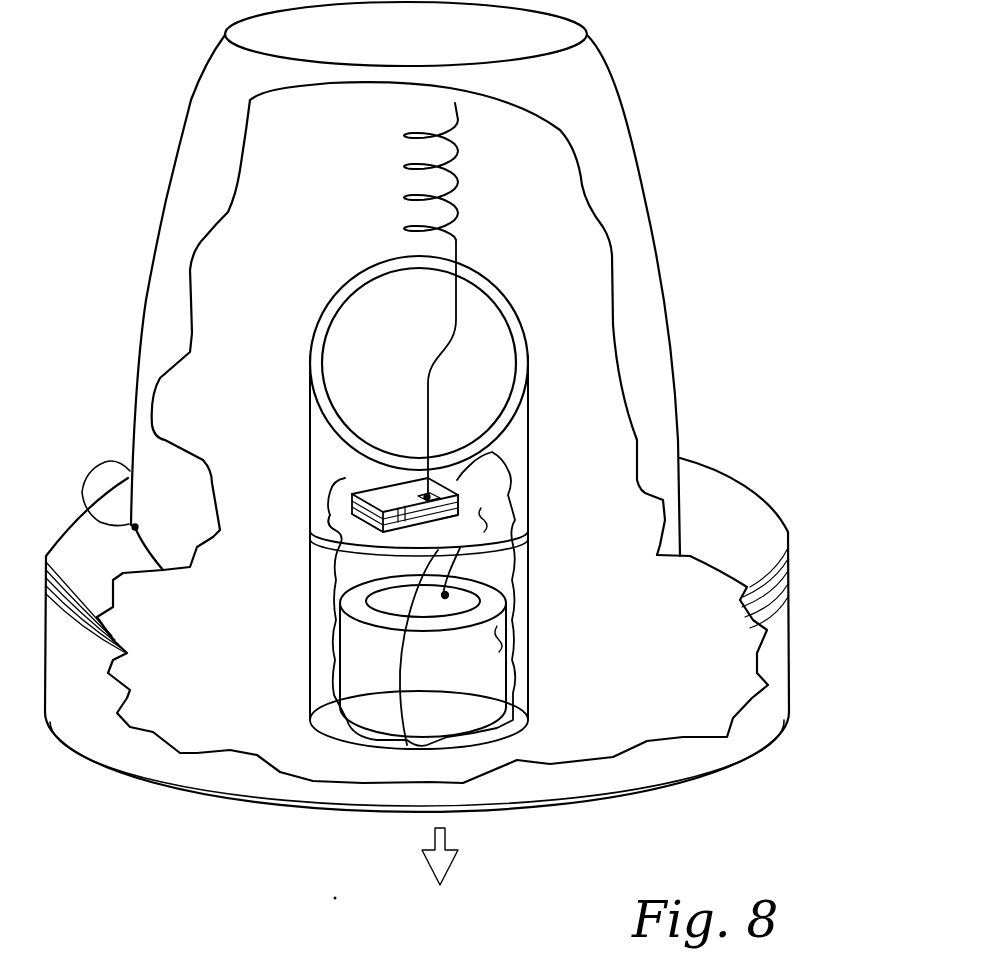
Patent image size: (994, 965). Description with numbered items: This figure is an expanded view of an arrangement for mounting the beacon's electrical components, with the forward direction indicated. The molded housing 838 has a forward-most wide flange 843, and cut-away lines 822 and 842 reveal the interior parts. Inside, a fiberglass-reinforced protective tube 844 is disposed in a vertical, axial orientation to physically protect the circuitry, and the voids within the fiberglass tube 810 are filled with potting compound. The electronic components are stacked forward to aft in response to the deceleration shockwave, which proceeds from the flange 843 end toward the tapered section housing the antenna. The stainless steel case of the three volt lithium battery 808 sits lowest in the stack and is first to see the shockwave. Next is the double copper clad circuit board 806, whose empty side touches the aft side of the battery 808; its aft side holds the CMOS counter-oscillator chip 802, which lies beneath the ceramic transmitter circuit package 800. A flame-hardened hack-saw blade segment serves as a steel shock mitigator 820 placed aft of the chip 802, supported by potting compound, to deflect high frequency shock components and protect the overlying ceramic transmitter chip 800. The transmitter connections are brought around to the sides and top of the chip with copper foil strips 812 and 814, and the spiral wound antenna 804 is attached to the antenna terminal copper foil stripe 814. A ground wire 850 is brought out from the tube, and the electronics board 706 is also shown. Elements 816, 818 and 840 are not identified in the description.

The electronics board 706 is at (387, 543).
The ceramic transmitter chip 800 is at (372, 497).
The counter-oscillator circuit chip 802 is at (450, 352).
The spiral wound antenna 804 is at (460, 186).
The circuit board 806 is at (490, 520).
The lithium battery 808 is at (500, 632).
The fiberglass tube 810 is at (529, 445).
The copper foil strip 812 is at (383, 520).
The antenna terminal copper foil stripe 814 is at (455, 508).
The sensor 816 is at (407, 481).
The circuit board bottom layer 818 is at (350, 515).
The steel shock mitigator 820 is at (332, 518).
The cut-away line 822 is at (513, 560).
The housing 838 is at (672, 305).
The threads 840 is at (780, 505).
The cut-away line 842 is at (665, 238).
The wide flange 843 is at (793, 650).
The fiberglass-reinforced tube 844 is at (345, 283).
The ground wire 850 is at (108, 462).